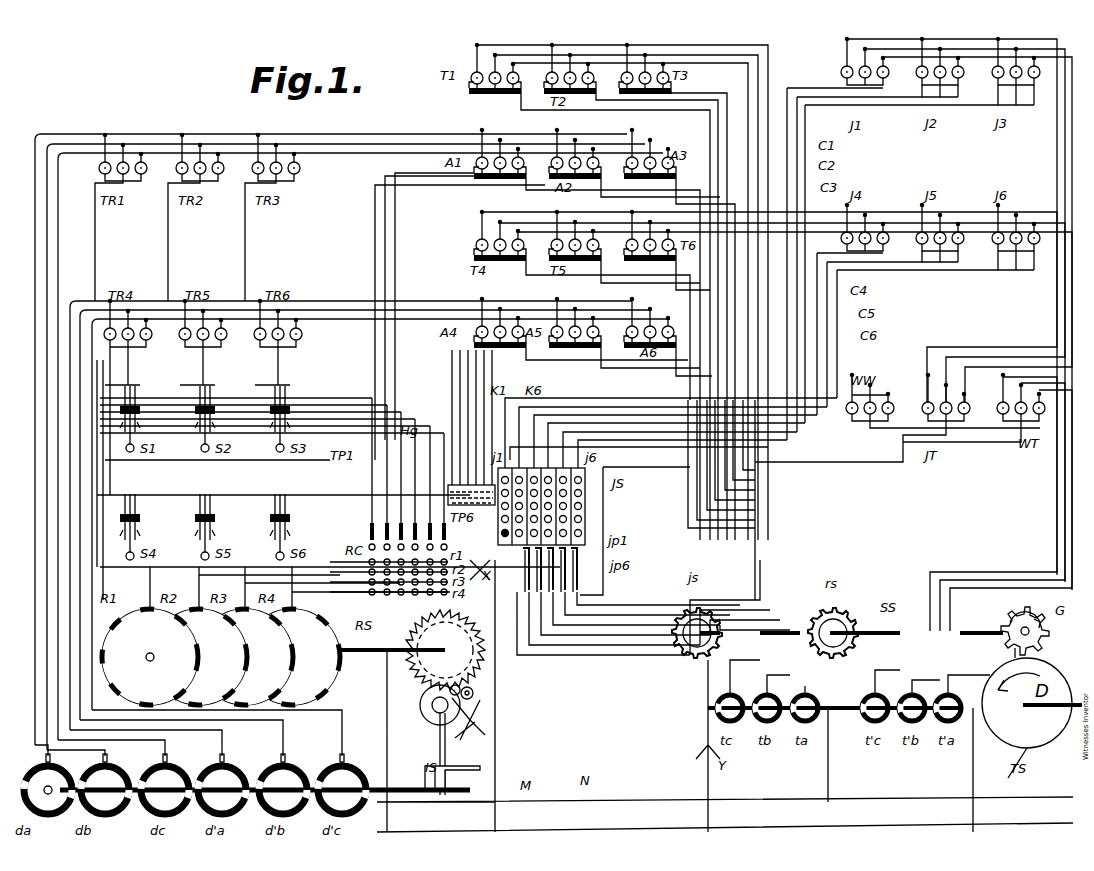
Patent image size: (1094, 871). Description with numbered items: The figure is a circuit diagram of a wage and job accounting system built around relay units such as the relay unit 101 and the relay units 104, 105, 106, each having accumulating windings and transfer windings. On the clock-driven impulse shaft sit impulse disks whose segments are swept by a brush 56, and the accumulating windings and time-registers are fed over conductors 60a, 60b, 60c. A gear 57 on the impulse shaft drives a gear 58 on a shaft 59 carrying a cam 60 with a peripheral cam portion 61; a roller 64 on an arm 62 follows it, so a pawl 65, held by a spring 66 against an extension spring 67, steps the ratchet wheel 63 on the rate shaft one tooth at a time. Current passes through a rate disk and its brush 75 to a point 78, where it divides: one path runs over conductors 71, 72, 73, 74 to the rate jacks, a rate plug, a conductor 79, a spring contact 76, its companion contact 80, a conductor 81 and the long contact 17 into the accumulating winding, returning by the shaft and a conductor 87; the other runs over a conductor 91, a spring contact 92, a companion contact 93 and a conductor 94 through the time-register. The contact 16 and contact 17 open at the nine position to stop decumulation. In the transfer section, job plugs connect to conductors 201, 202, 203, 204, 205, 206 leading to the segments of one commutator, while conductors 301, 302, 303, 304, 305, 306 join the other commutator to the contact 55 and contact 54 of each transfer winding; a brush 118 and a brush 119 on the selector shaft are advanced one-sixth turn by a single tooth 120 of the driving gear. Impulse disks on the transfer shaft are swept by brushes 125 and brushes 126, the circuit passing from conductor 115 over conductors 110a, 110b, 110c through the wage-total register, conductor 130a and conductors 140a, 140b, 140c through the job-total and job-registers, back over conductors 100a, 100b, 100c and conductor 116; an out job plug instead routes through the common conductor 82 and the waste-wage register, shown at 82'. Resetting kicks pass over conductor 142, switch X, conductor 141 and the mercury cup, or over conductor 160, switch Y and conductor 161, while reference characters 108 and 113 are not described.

The contact 54 is at (477, 93).
The contact 55 is at (500, 92).
The relay unit 101 is at (490, 119).
The relay 108 is at (569, 119).
The relay 113 is at (648, 119).
The conductor 302 is at (712, 108).
The conductor 303 is at (725, 108).
The conductor 301 is at (730, 200).
The conductor 100a is at (768, 60).
The conductor 100b is at (758, 80).
The conductor 100c is at (748, 105).
The long contact 17 is at (500, 180).
The contact 16 is at (510, 180).
The conductor 60a is at (320, 134).
The conductor 60b is at (355, 144).
The conductor 60c is at (395, 153).
The conductor 94 is at (95, 285).
The conductor 81 is at (321, 337).
The common conductor 82 is at (363, 337).
The spring contact 92 is at (135, 395).
The spring contact 76 is at (233, 467).
The companion contact 80 is at (142, 535).
The companion contact 93 is at (116, 450).
The conductor 79 is at (372, 430).
The conductor 71 is at (251, 522).
The conductor 72 is at (266, 537).
The conductor 73 is at (326, 525).
The conductor 74 is at (348, 525).
The conductor 91 is at (112, 552).
The point 78 is at (140, 573).
The brush 75 is at (295, 608).
The ratchet wheel 63 is at (432, 628).
The pawl 65 is at (470, 690).
The peripheral cam portion 61 is at (435, 683).
The cam 60 is at (425, 720).
The shaft 59 is at (438, 745).
The gear 58 is at (452, 765).
The gear 57 is at (445, 792).
The conductor 87 is at (405, 803).
The roller 64 is at (472, 690).
The arm 62 is at (478, 715).
The spring 66 is at (500, 660).
The extension spring 67 is at (470, 738).
The conductor 142 is at (495, 775).
The conductor 201 is at (570, 660).
The conductor 202 is at (585, 650).
The conductor 203 is at (598, 640).
The conductor 204 is at (610, 630).
The conductor 205 is at (620, 620).
The conductor 206 is at (630, 612).
The brush 118 is at (693, 657).
The brushes 125 is at (730, 690).
The conductor 161 is at (708, 716).
The conductor 160 is at (708, 790).
The conductor 116 is at (828, 785).
The conductor 115 is at (973, 790).
The brush 119 is at (833, 650).
The single tooth 120 is at (1010, 655).
The brushes 126 is at (915, 688).
The conductor 130a is at (985, 440).
The conductor 110a is at (1057, 470).
The conductor 110b is at (1065, 487).
The conductor 110c is at (1072, 512).
The conductor 140a is at (1057, 290).
The conductor 140b is at (1065, 278).
The conductor 140c is at (1072, 255).
The relay unit 104 is at (490, 287).
The relay unit 105 is at (568, 287).
The relay unit 106 is at (647, 285).
The conductor 304 is at (700, 384).
The conductor 305 is at (700, 372).
The conductor 306 is at (710, 352).
The conductor 141 is at (480, 540).
The conductor 82' is at (625, 511).
The brush 56 is at (340, 758).